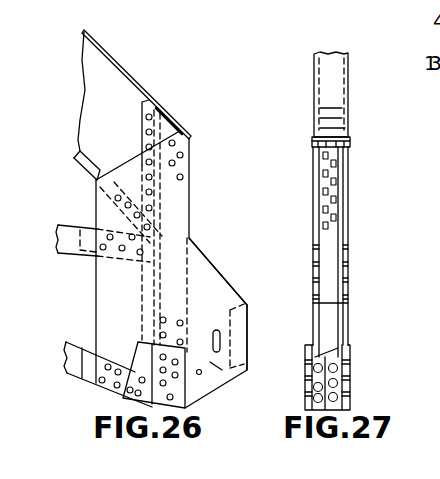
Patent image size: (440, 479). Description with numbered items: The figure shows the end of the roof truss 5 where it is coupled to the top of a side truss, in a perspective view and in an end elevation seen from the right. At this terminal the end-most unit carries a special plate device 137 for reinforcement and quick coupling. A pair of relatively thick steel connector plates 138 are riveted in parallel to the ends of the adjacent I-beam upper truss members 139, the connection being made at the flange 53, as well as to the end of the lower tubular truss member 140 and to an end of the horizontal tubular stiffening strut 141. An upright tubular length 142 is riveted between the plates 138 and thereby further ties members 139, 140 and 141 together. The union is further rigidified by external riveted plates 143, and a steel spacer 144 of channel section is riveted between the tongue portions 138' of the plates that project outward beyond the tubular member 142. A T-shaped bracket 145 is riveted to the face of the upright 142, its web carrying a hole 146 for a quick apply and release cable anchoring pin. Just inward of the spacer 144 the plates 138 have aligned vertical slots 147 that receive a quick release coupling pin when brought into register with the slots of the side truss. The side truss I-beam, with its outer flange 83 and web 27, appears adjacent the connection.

In FIG. 26, the roof truss 5 is at (180, 120).
In FIG. 26, the web 27 is at (96, 180).
In FIG. 26, the flange 53 is at (75, 156).
In FIG. 26, the outer flange 83 is at (120, 63).
In FIG. 26, the plate device 137 is at (206, 251).
In FIG. 27, the plate device 137 is at (349, 233).
In FIG. 26, the connector plates 138 is at (116, 263).
In FIG. 27, the connector plates 138 is at (335, 252).
In FIG. 26, the tongue portions 138' is at (248, 318).
In FIG. 26, the upper truss members 139 is at (147, 90).
In FIG. 27, the upper truss members 139 is at (357, 99).
In FIG. 26, the lower tubular truss member 140 is at (72, 368).
In FIG. 26, the horizontal tubular stiffening strut 141 is at (67, 246).
In FIG. 26, the upright tubular length 142 is at (180, 214).
In FIG. 27, the upright tubular length 142 is at (322, 180).
In FIG. 26, the external riveted plates 143 is at (143, 348).
In FIG. 26, the spacer 144 is at (233, 335).
In FIG. 27, the spacer 144 is at (330, 333).
In FIG. 26, the T-shaped bracket 145 is at (221, 384).
In FIG. 26, the hole 146 is at (201, 374).
In FIG. 27, the hole 146 is at (352, 372).
In FIG. 26, the vertical slots 147 is at (217, 330).